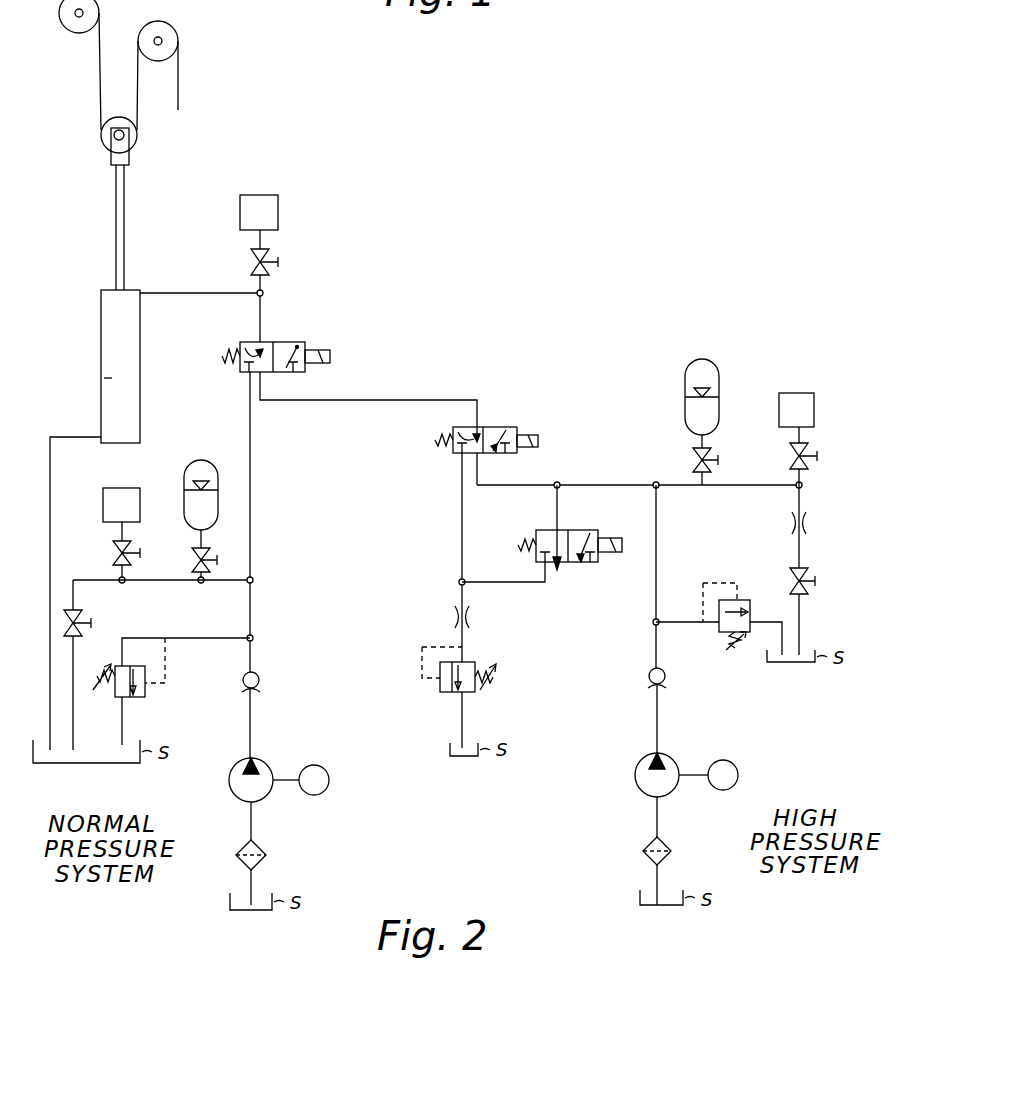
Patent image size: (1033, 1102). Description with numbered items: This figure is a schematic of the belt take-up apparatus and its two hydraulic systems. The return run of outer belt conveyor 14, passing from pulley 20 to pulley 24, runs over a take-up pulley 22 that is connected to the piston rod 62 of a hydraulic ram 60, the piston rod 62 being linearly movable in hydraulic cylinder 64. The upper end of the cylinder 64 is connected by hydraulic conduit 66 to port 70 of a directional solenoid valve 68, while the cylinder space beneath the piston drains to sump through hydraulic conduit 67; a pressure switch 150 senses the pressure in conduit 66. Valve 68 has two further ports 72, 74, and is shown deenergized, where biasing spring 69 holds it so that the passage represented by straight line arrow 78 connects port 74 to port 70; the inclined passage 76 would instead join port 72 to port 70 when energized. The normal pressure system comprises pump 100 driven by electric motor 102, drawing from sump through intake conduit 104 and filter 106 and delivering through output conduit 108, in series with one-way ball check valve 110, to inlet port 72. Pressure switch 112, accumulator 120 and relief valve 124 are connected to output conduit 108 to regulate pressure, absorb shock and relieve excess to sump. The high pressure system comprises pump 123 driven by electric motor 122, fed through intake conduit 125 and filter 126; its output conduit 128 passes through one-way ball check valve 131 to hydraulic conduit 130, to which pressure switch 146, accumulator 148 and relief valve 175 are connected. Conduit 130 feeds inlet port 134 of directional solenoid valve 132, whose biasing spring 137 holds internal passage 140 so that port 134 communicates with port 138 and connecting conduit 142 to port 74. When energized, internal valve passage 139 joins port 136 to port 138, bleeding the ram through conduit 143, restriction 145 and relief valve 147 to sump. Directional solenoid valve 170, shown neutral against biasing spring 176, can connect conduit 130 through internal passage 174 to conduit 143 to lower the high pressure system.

The outer belt conveyor 14 is at (76, 86).
The pulley 20 is at (72, 30).
The take-up pulley 22 is at (104, 140).
The pulley 24 is at (172, 31).
The hydraulic ram 60 is at (93, 336).
The piston rod 62 is at (115, 240).
The hydraulic cylinder 64 is at (110, 378).
The hydraulic conduit 66 is at (190, 283).
The hydraulic conduit 67 is at (52, 562).
The directional solenoid valve 68 is at (306, 376).
The biasing spring 69 is at (222, 356).
The port 70 is at (262, 340).
The port 72 is at (247, 373).
The port 74 is at (250, 385).
The valve position 76 is at (292, 346).
The straight line arrow 78 is at (256, 346).
The pump 100 is at (266, 796).
The electric motor 102 is at (329, 786).
The intake conduit 104 is at (254, 830).
The filter 106 is at (268, 855).
The output conduit 108 is at (252, 513).
The one-way ball check valve 110 is at (262, 677).
The pressure switch 112 is at (136, 472).
The accumulator 120 is at (219, 448).
The electric motor 122 is at (740, 775).
The pump 123 is at (670, 793).
The relief valve 124 is at (138, 697).
The intake conduit 125 is at (657, 825).
The filter 126 is at (643, 850).
The output conduit 128 is at (658, 550).
The hydraulic conduit 130 is at (614, 472).
The one-way ball check valve 131 is at (649, 676).
The directional solenoid valve 132 is at (525, 428).
The inlet port 134 is at (480, 456).
The port 136 is at (460, 455).
The biasing spring 137 is at (435, 440).
The port 138 is at (480, 426).
The internal valve passage 139 is at (509, 437).
The internal passage 140 is at (472, 432).
The connecting conduit 142 is at (398, 399).
The conduit 143 is at (460, 536).
The restriction 145 is at (454, 617).
The pressure switch 146 is at (809, 392).
The relief valve 147 is at (442, 688).
The accumulator 148 is at (710, 362).
The pressure switch 150 is at (276, 198).
The directional solenoid valve 170 is at (585, 566).
The internal passage 174 is at (578, 532).
The relief valve 175 is at (738, 600).
The biasing spring 176 is at (521, 546).